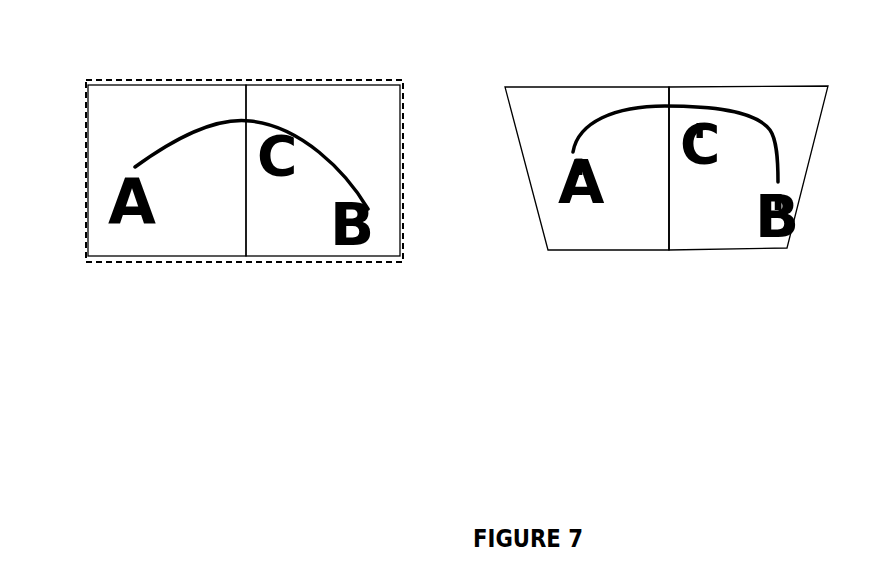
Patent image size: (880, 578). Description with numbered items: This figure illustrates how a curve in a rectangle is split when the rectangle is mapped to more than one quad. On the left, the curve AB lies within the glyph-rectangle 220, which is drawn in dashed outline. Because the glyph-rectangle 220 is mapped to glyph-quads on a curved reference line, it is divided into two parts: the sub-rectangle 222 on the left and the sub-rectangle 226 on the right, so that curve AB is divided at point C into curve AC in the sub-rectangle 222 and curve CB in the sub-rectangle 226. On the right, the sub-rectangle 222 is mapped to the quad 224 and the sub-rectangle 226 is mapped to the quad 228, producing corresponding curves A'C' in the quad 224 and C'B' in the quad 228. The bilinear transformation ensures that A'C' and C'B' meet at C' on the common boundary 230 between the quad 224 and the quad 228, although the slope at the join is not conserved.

The glyph-rectangle 220 is at (86, 80).
The sub-rectangle 222 is at (117, 82).
The sub-rectangle 226 is at (285, 80).
The quad 224 is at (525, 87).
The quad 228 is at (727, 87).
The common boundary 230 is at (670, 215).